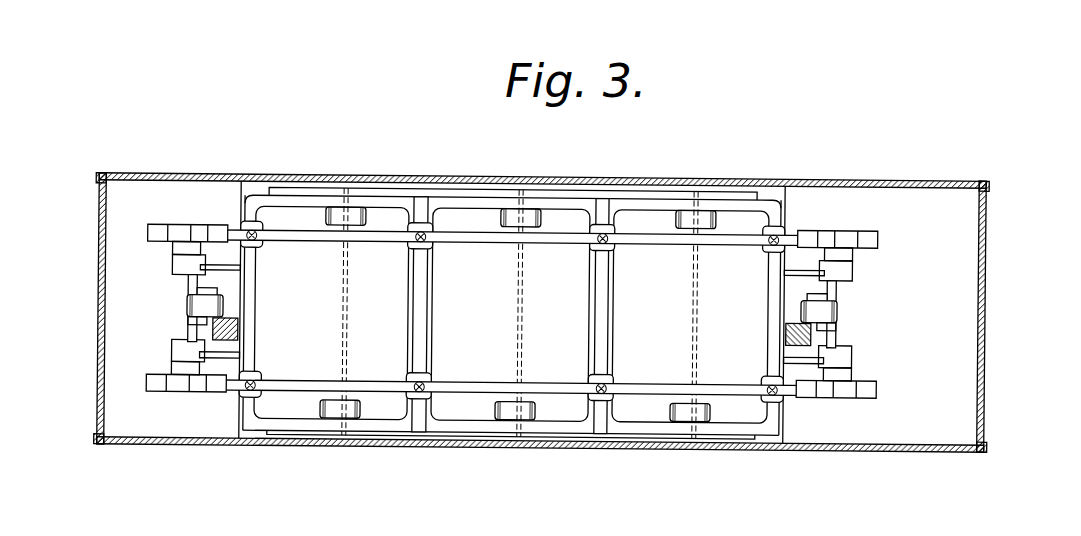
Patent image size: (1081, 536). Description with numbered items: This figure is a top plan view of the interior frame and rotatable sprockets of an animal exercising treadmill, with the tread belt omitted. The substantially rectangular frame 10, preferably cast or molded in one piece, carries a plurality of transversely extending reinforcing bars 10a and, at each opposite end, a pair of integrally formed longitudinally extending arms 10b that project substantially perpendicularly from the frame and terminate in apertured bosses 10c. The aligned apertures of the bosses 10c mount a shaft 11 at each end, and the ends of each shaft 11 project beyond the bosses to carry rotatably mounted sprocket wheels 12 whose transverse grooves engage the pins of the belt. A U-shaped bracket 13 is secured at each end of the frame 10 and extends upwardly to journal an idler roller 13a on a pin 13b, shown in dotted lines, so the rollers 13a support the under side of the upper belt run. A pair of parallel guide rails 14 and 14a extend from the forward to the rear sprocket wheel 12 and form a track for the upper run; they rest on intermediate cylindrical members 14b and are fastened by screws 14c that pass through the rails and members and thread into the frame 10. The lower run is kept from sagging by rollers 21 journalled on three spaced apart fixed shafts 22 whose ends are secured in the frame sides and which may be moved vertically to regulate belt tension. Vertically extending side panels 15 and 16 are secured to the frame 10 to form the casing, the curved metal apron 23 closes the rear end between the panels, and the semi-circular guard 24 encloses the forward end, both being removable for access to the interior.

The frame 10 is at (775, 205).
The reinforcing bars 10a is at (428, 294).
The arms 10b is at (215, 270).
The apertured bosses 10c is at (853, 265).
The shaft 11 is at (187, 286).
The sprocket wheels 12 is at (165, 229).
The U-shaped bracket 13 is at (200, 295).
The idler rollers 13a is at (190, 315).
The pins 13b is at (230, 296).
The guide rail 14 is at (298, 236).
The guide rail 14a is at (382, 375).
The cylindrical members 14b is at (258, 379).
The screws 14c is at (432, 243).
The side panel 15 is at (470, 178).
The side panel 16 is at (480, 448).
The rollers 21 is at (366, 219).
The fixed shafts 22 is at (347, 333).
The apron 23 is at (988, 350).
The guard 24 is at (98, 298).